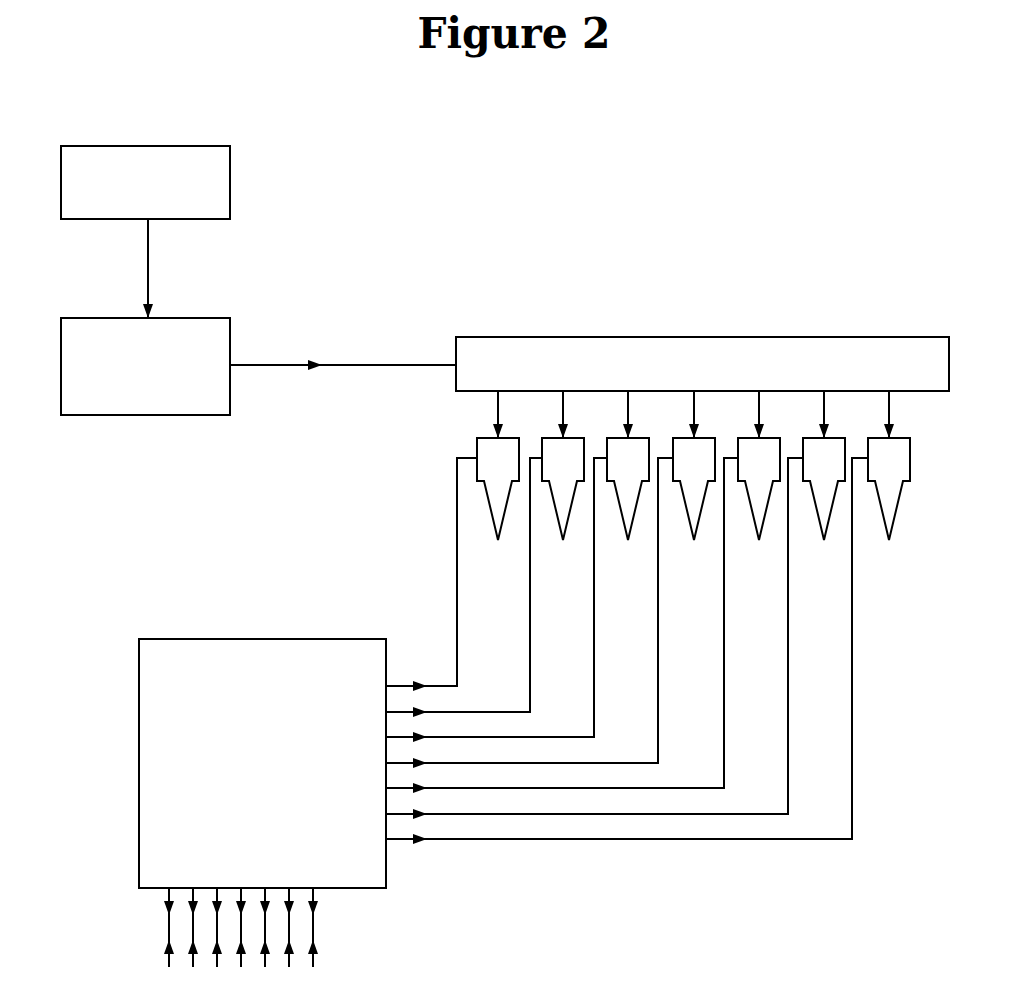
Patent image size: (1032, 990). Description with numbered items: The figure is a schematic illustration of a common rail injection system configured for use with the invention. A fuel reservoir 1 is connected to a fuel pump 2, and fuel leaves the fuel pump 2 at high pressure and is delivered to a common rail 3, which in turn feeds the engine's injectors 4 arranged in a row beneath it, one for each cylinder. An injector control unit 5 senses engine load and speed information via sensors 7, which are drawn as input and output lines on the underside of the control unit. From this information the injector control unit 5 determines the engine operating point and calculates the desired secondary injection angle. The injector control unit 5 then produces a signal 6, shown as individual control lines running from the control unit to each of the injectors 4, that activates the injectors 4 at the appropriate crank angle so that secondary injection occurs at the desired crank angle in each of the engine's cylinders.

The fuel reservoir 1 is at (230, 179).
The fuel pump 2 is at (230, 327).
The common rail 3 is at (644, 337).
The injectors 4 is at (477, 448).
The injector control unit 5 is at (290, 639).
The signal 6 is at (503, 839).
The sensors 7 is at (313, 923).